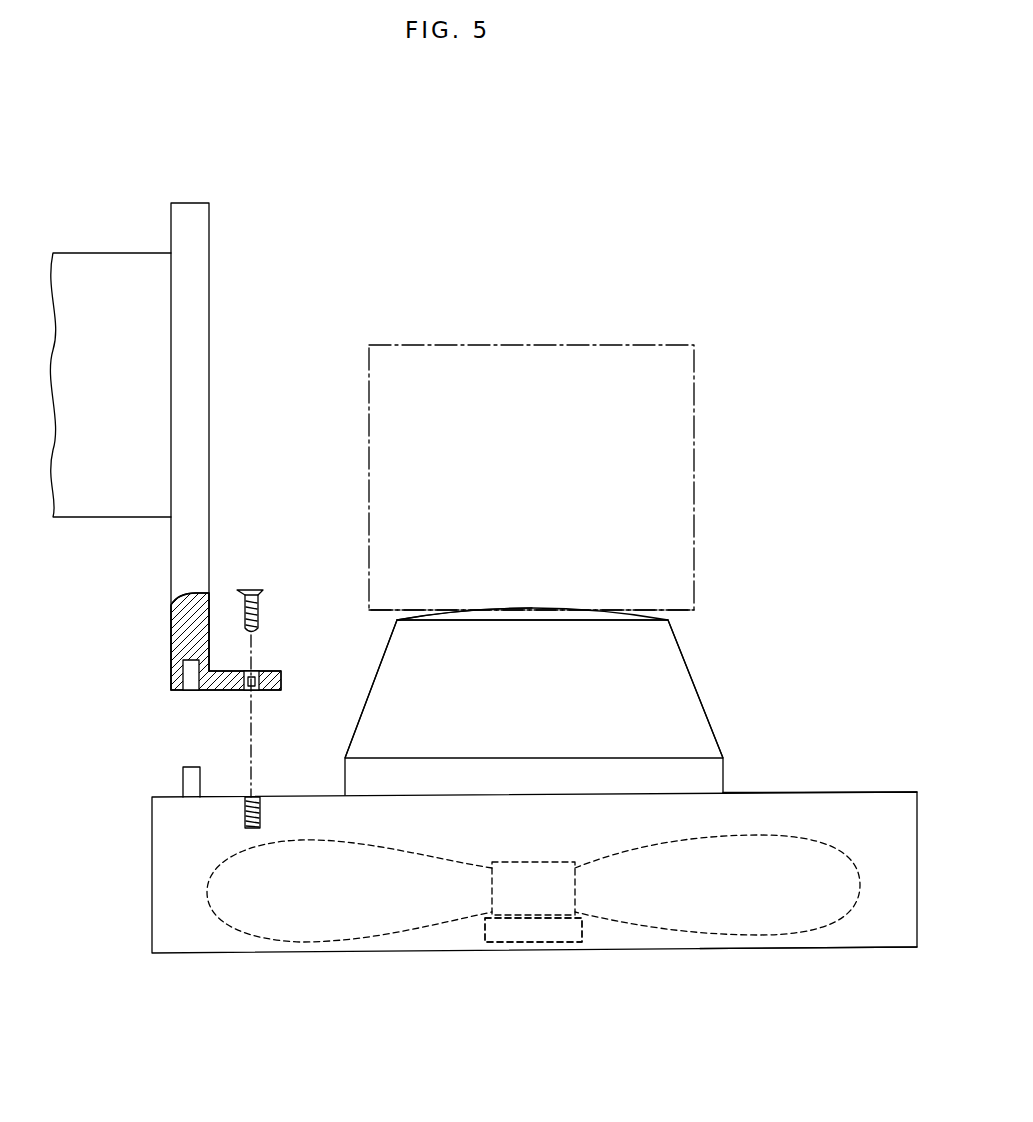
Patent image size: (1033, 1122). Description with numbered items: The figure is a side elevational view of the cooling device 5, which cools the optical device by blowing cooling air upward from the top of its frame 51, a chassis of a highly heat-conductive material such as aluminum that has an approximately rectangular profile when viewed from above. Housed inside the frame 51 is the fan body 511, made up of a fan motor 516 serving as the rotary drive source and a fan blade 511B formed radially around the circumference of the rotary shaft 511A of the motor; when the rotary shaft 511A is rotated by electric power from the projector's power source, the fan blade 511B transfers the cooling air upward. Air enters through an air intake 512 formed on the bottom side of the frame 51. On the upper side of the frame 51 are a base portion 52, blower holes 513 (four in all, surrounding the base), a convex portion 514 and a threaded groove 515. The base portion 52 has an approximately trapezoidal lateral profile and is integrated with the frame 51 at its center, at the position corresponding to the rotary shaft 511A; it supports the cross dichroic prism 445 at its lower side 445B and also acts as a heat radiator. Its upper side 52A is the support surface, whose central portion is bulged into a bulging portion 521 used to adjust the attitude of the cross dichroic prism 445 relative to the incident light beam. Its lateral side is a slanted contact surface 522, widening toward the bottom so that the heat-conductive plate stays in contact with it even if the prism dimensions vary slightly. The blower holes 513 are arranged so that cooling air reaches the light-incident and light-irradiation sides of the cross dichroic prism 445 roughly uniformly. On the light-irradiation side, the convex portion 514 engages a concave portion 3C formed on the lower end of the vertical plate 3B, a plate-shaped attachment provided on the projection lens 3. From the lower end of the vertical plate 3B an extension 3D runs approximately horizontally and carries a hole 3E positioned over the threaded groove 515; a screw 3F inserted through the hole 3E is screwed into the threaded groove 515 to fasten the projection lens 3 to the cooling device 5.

The projection lens 3 is at (110, 263).
The vertical plate 3B is at (191, 218).
The concave portion 3C is at (190, 690).
The extension 3D is at (283, 678).
The hole 3E is at (258, 693).
The screw 3F is at (253, 588).
The cross dichroic prism 445 is at (694, 417).
The lower side of the cross dichroic prism 445B is at (688, 607).
The cooling device 5 is at (852, 584).
The frame 51 is at (757, 803).
The fan body 511 is at (712, 1015).
The rotary shaft 511A is at (593, 917).
The fan blade 511B is at (680, 932).
The air intake 512 is at (860, 947).
The blower hole 513 is at (858, 788).
The convex portion 514 is at (185, 772).
The threaded groove 515 is at (258, 797).
The fan motor 516 is at (480, 937).
The base portion 52 is at (686, 693).
The upper side of the base portion 52A is at (452, 610).
The bulging portion 521 is at (550, 615).
The contact surface 522 is at (658, 657).